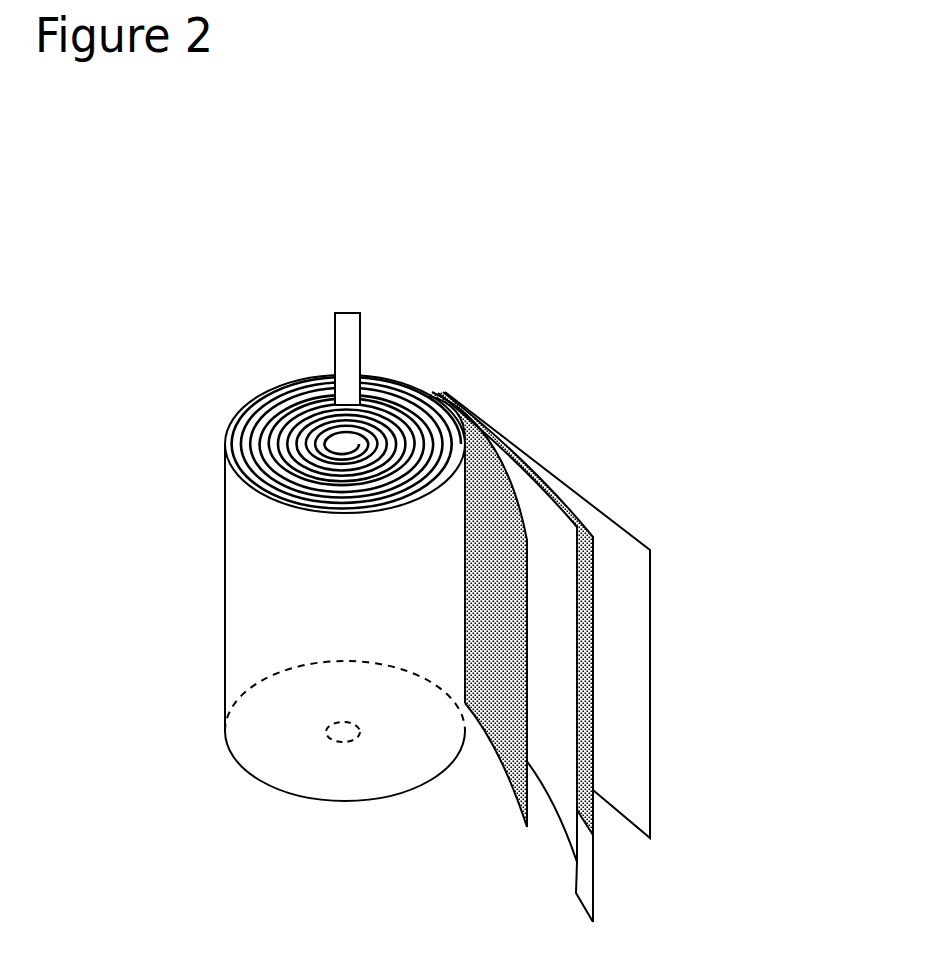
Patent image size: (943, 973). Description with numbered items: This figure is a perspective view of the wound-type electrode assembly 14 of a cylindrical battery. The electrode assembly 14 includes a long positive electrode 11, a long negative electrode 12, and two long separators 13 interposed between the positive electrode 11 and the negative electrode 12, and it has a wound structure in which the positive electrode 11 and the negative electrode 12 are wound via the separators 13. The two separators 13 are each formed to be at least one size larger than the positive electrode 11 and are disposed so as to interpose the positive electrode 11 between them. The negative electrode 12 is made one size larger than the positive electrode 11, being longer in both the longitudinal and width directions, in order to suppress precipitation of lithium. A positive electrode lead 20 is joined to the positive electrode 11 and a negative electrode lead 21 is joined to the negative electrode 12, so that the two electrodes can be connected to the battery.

The positive electrode 11 is at (494, 478).
The negative electrode 12 is at (571, 534).
The separator 13 is at (553, 682).
The electrode assembly 14 is at (657, 292).
The positive electrode lead 20 is at (337, 325).
The negative electrode lead 21 is at (583, 885).